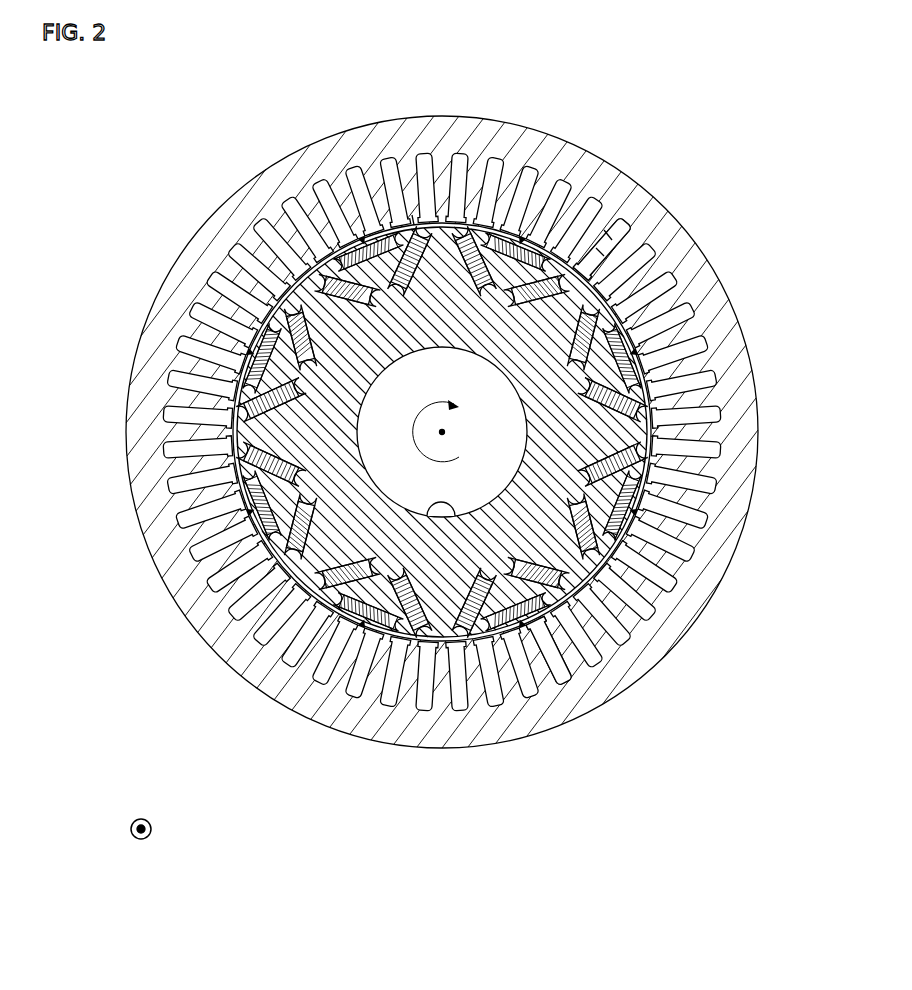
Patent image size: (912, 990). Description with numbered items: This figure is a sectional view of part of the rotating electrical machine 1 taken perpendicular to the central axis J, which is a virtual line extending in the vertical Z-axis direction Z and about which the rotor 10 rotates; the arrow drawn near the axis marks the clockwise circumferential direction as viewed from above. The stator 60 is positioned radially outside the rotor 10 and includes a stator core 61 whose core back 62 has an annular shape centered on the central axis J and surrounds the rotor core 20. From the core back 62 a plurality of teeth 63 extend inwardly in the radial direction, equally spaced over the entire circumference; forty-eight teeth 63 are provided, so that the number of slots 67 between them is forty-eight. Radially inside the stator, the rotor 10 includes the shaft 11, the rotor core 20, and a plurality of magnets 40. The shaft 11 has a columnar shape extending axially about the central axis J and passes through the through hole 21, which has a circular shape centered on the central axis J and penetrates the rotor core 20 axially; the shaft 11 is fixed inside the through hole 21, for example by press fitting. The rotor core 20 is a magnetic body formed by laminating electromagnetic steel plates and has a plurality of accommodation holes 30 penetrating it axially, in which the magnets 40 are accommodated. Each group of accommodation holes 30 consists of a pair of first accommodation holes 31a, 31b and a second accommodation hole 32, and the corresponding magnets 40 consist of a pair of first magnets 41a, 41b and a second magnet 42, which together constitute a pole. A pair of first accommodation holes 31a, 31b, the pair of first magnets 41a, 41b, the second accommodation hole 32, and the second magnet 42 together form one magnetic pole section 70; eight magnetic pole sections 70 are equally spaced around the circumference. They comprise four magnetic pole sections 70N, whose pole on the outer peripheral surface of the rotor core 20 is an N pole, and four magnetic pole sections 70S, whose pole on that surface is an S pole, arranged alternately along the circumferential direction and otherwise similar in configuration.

The rotating electrical machine 1 is at (644, 101).
The rotor 10 is at (478, 690).
The shaft 11 is at (555, 670).
The rotor core 20 is at (610, 478).
The through hole 21 is at (445, 522).
The accommodation holes 30 is at (840, 318).
The first accommodation hole 31a is at (590, 305).
The first accommodation hole 31b is at (432, 245).
The second accommodation hole 32 is at (507, 252).
The magnets 40 is at (770, 152).
The first magnet 41a is at (598, 250).
The first magnet 41b is at (606, 232).
The second magnet 42 is at (623, 225).
The stator 60 is at (468, 116).
The stator core 61 is at (388, 63).
The core back 62 is at (396, 224).
The teeth 63 is at (414, 224).
The slots 67 is at (268, 220).
The magnetic pole sections 70 is at (802, 578).
The magnetic pole section 70N is at (362, 239).
The magnetic pole section 70S is at (522, 240).
The central axis J is at (438, 436).
The Z-axis direction Z is at (128, 829).